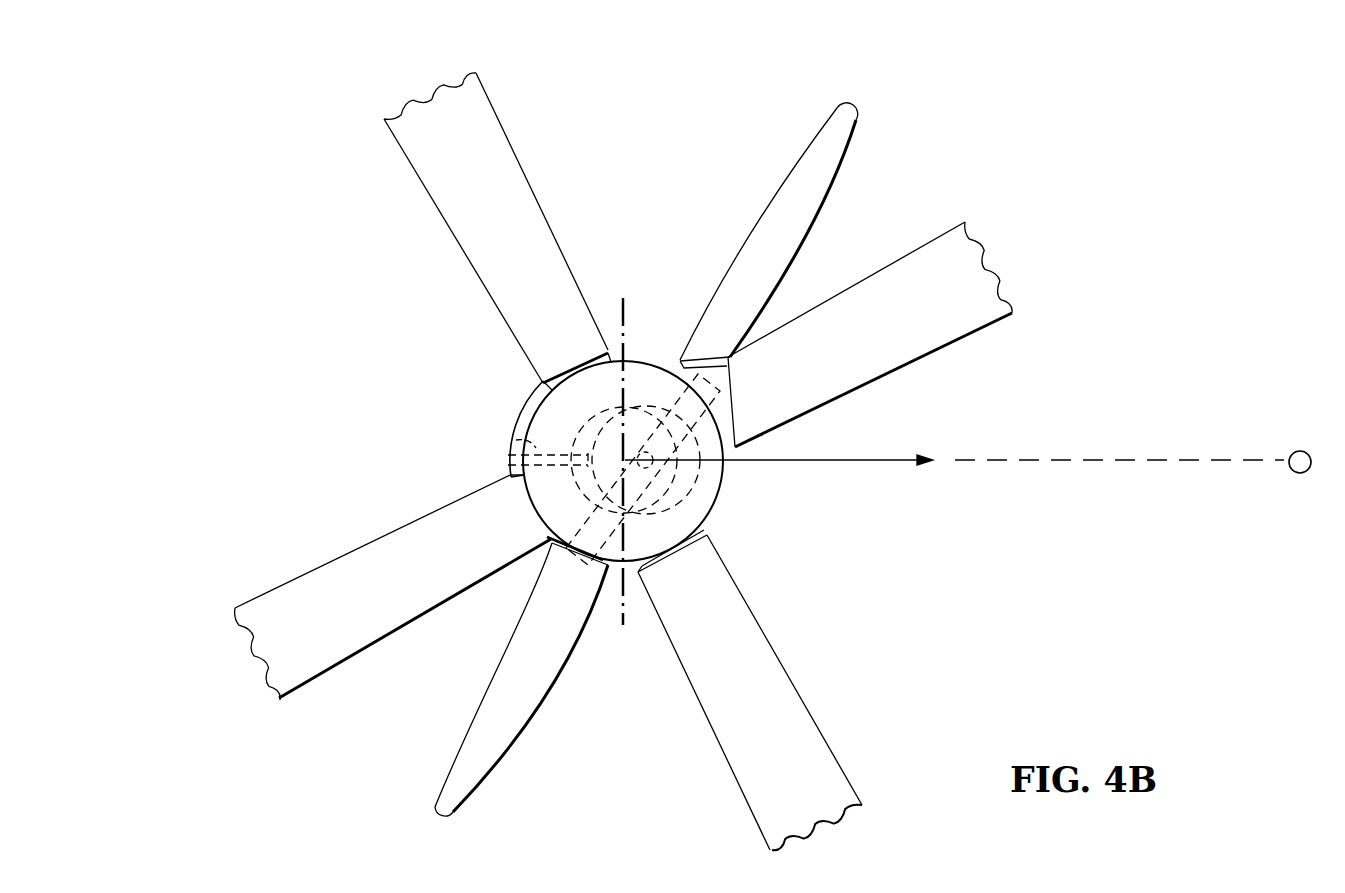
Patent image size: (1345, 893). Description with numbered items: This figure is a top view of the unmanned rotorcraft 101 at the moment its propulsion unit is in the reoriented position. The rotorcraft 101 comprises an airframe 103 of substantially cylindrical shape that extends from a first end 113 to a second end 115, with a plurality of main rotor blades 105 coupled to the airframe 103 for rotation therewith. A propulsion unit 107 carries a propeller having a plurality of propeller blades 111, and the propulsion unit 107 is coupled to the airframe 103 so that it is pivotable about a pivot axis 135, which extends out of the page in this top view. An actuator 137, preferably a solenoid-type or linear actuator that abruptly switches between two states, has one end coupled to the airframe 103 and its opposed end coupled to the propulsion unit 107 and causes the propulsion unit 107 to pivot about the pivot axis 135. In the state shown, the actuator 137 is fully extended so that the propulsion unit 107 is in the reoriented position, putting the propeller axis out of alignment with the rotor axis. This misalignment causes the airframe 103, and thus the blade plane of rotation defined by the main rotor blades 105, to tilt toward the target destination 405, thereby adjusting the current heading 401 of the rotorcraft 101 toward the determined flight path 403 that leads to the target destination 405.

The unmanned rotorcraft 101 is at (910, 145).
The airframe 103 is at (578, 561).
The main rotor blades 105 is at (424, 187).
The propulsion unit 107 is at (723, 482).
The propeller blades 111 is at (512, 746).
The first end 113 is at (714, 507).
The second end 115 is at (515, 428).
The pivot axis 135 is at (624, 312).
The actuator 137 is at (518, 441).
The current heading 401 is at (847, 463).
The flight path 403 is at (1127, 460).
The target destination 405 is at (1300, 451).